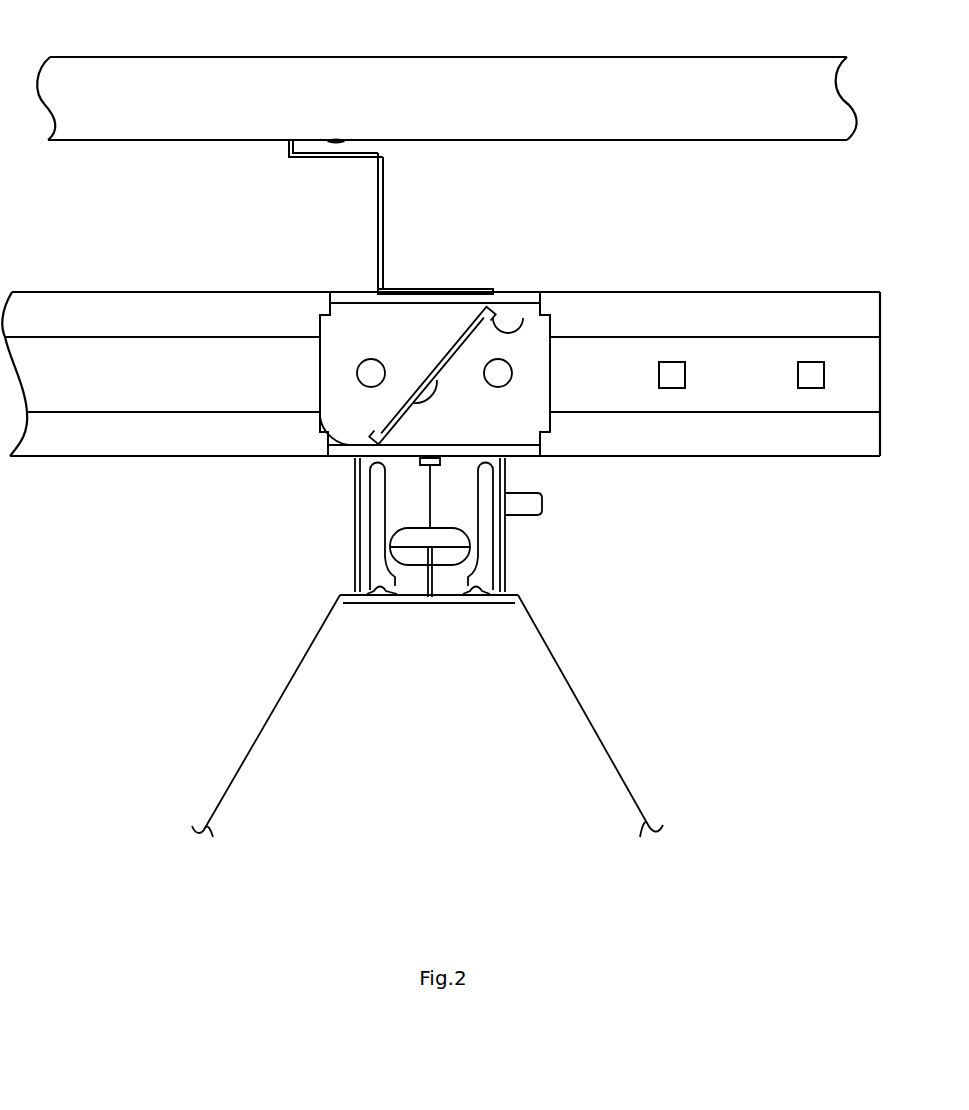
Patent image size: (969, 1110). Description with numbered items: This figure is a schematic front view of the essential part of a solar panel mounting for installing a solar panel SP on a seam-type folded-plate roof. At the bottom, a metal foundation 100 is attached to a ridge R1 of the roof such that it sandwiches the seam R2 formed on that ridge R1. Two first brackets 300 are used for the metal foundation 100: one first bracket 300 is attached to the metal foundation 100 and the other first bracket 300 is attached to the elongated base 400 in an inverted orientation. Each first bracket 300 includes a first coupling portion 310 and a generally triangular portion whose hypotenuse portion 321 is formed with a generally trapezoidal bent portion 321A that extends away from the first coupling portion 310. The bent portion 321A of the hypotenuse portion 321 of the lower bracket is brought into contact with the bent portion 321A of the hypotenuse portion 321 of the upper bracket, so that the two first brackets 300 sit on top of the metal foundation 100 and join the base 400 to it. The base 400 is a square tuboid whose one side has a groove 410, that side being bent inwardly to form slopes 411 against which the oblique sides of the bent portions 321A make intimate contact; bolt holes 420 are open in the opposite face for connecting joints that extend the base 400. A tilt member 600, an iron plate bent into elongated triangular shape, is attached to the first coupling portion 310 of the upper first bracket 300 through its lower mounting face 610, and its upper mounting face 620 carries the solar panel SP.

The solar panel SP is at (430, 87).
The tilt member 600 is at (391, 217).
The upper mounting face 620 is at (323, 160).
The lower mounting face 610 is at (408, 288).
The base 400 is at (453, 375).
The slope 411 is at (145, 312).
The groove 410 is at (238, 407).
The bolt hole 420 is at (672, 372).
The first bracket 300 is at (424, 361).
The first coupling portion 310 is at (515, 298).
The hypotenuse portion 321 is at (318, 413).
The bent portion 321A is at (410, 403).
The metal foundation 100 is at (456, 530).
The seam R2 is at (470, 550).
The ridge R1 is at (302, 667).